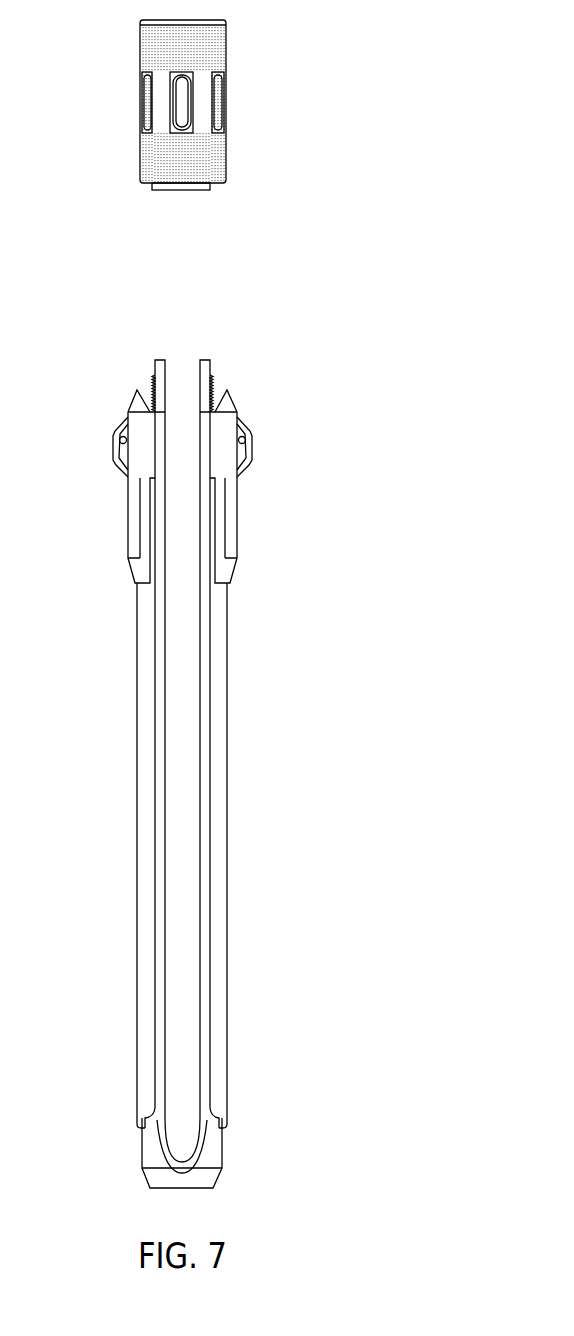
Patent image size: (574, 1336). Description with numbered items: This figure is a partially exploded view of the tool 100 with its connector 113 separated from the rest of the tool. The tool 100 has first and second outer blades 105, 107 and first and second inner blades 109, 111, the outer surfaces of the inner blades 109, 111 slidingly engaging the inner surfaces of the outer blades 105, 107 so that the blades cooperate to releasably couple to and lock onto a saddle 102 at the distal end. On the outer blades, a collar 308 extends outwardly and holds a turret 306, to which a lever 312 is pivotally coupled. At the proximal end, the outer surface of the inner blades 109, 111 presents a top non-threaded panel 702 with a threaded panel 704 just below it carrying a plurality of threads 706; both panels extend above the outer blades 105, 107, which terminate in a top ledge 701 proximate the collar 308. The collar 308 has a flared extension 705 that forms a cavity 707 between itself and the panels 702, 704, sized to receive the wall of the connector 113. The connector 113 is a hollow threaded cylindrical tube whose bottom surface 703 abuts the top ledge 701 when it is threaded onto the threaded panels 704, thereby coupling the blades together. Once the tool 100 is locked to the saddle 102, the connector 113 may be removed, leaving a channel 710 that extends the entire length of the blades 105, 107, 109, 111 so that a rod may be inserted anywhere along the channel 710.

The tool 100 is at (215, 755).
The saddle 102 is at (222, 1158).
The first outer blade 105 is at (228, 968).
The second outer blade 107 is at (138, 1020).
The first inner blade 109 is at (198, 747).
The second inner blade 111 is at (168, 839).
The connector 113 is at (226, 53).
The turret 306 is at (253, 450).
The collar 308 is at (238, 408).
The lever 312 is at (127, 544).
The top ledge 701 is at (163, 412).
The top non-threaded panel 702 is at (210, 368).
The bottom surface 703 is at (182, 190).
The threaded panel 704 is at (212, 380).
The flared extension 705 is at (129, 410).
The threads 706 is at (224, 393).
The cavity 707 is at (150, 398).
The channel 710 is at (182, 635).